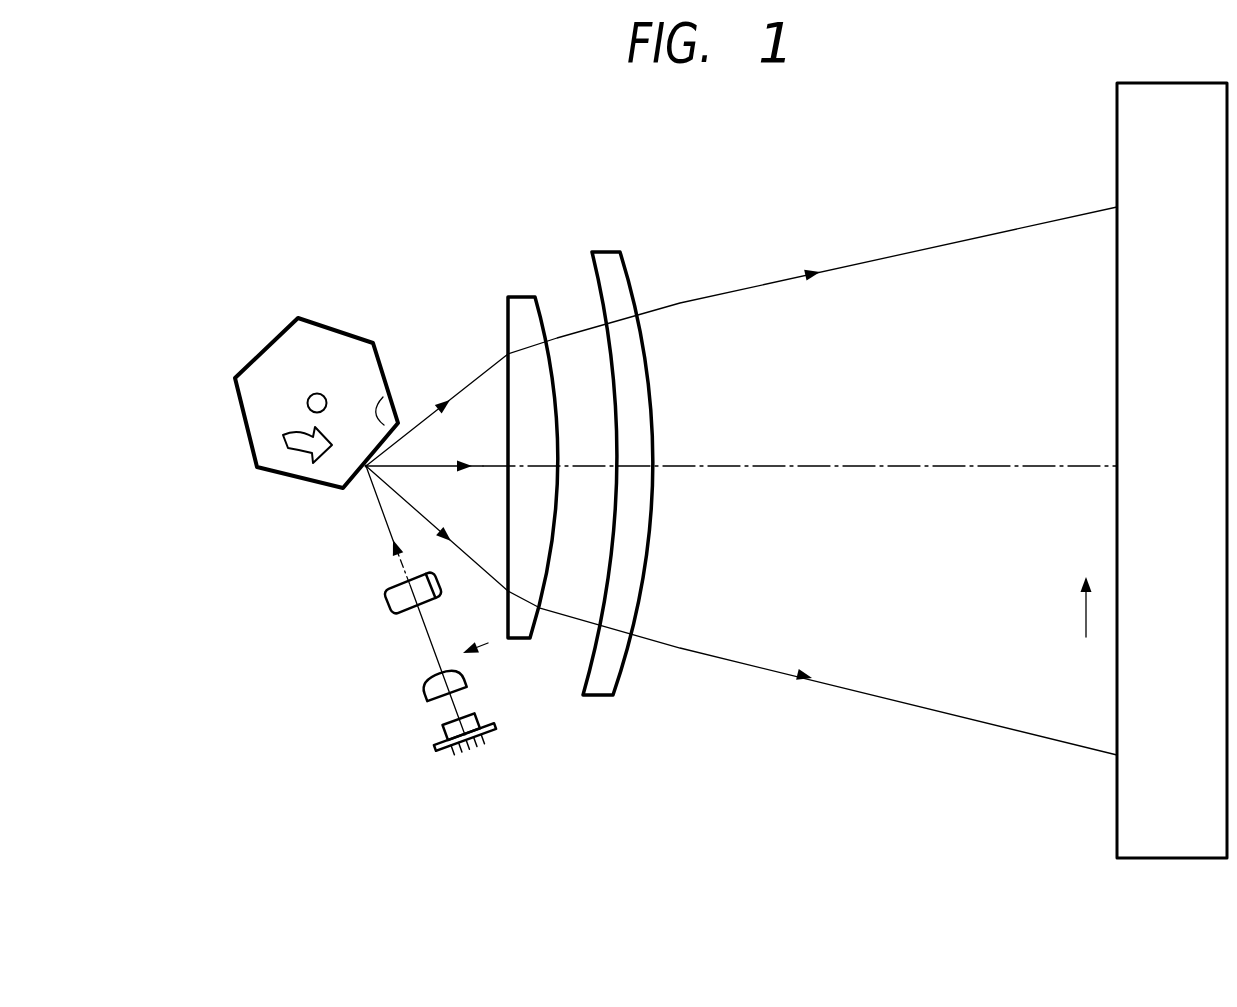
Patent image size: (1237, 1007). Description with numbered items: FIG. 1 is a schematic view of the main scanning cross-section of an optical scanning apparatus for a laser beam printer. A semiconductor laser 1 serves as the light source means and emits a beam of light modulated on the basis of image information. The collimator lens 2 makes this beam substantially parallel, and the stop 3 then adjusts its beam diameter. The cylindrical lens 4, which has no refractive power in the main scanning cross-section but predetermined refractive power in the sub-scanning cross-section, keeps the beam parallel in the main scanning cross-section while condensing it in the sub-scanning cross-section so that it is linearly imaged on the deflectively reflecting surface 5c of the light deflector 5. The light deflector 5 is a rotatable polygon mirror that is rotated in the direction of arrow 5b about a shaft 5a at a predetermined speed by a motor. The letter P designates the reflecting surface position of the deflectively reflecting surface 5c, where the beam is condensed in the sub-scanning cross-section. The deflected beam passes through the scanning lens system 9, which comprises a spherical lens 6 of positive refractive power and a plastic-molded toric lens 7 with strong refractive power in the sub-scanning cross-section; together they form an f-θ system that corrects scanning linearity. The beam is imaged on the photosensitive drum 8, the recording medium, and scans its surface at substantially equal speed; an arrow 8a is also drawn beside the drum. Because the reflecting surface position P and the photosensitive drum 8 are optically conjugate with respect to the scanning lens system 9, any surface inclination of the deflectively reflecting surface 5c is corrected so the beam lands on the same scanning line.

The semiconductor laser 1 is at (437, 737).
The collimator lens 2 is at (423, 690).
The stop 3 is at (405, 672).
The cylindrical lens 4 is at (385, 597).
The light deflector 5 is at (245, 428).
The shaft 5a is at (318, 392).
The arrow 5b is at (296, 455).
The deflectively reflecting surface 5c is at (383, 397).
The spherical lens 6 is at (520, 306).
The toric lens 7 is at (608, 262).
The photosensitive drum 8 is at (1117, 167).
The sub-scanning direction of drum 8a is at (1083, 615).
The scanning lens system 9 is at (628, 200).
The reflecting surface position P is at (363, 476).